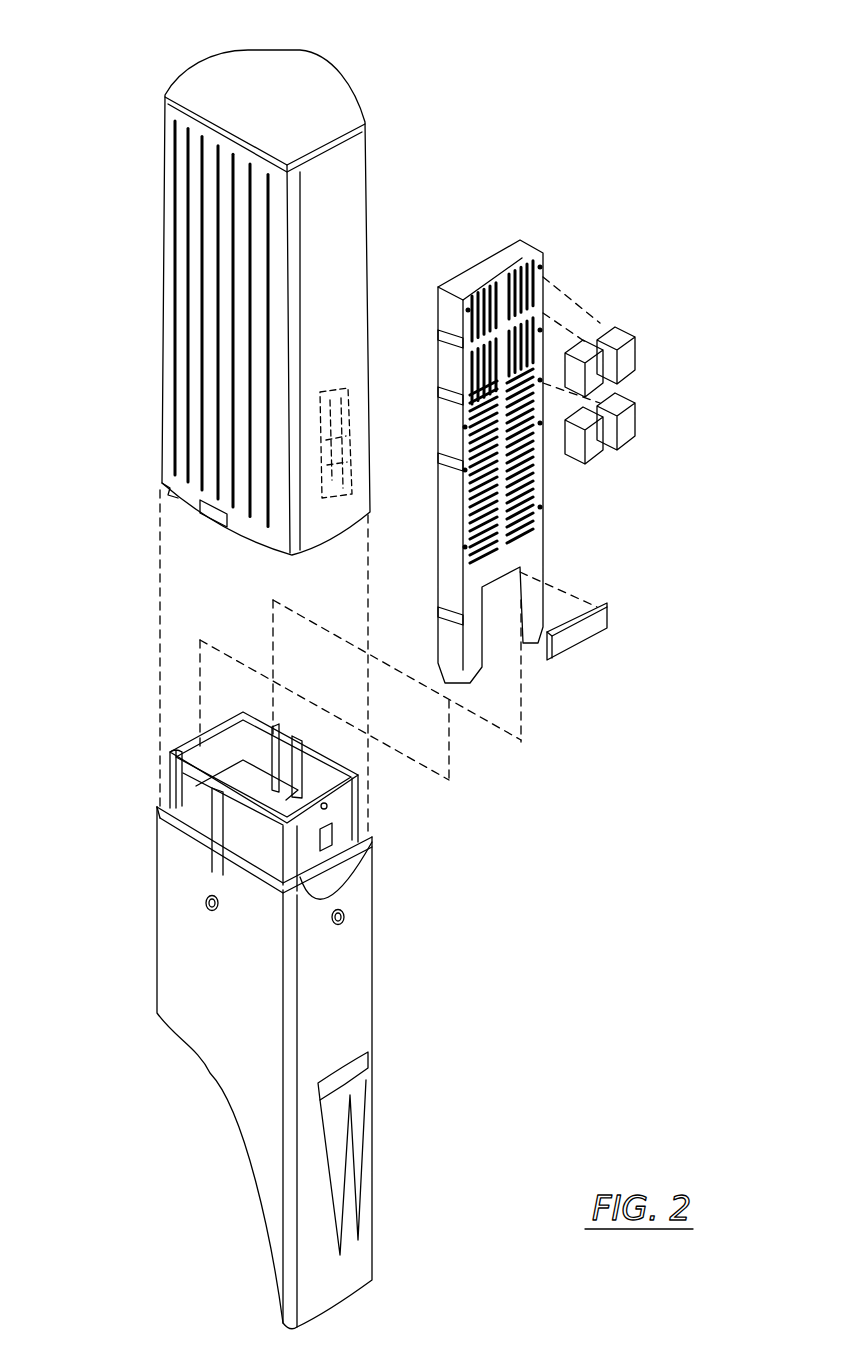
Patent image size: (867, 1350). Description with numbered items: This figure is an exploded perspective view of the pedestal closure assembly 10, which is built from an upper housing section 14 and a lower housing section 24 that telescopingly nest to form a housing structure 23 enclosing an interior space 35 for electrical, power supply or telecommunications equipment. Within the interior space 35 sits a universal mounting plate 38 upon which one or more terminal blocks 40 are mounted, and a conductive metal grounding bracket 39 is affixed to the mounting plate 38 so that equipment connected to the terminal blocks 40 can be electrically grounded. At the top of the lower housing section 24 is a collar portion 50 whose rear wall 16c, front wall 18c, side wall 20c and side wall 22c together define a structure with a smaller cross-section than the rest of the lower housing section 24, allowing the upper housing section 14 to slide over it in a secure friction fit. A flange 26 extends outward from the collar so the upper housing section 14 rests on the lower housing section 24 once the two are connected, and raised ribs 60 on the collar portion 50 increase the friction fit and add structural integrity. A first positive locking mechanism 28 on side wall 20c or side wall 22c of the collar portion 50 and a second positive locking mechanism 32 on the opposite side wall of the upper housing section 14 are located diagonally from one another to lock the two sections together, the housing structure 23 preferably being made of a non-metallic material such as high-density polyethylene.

The pedestal closure assembly 10 is at (600, 875).
The upper housing section 14 is at (152, 440).
The rear wall 16c is at (332, 840).
The front wall 18c is at (170, 754).
The side wall 20c is at (242, 845).
The side wall 22c is at (333, 750).
The housing structure 23 is at (181, 518).
The lower housing section 24 is at (200, 1082).
The flange 26 is at (318, 882).
The first positive locking mechanism 28 is at (158, 500).
The second positive locking mechanism 32 is at (343, 458).
The interior space 35 is at (215, 98).
The universal mounting plate 38 is at (540, 517).
The grounding bracket 39 is at (580, 638).
The terminal blocks 40 is at (630, 347).
The collar portion 50 is at (380, 822).
The raised ribs 60 is at (217, 828).